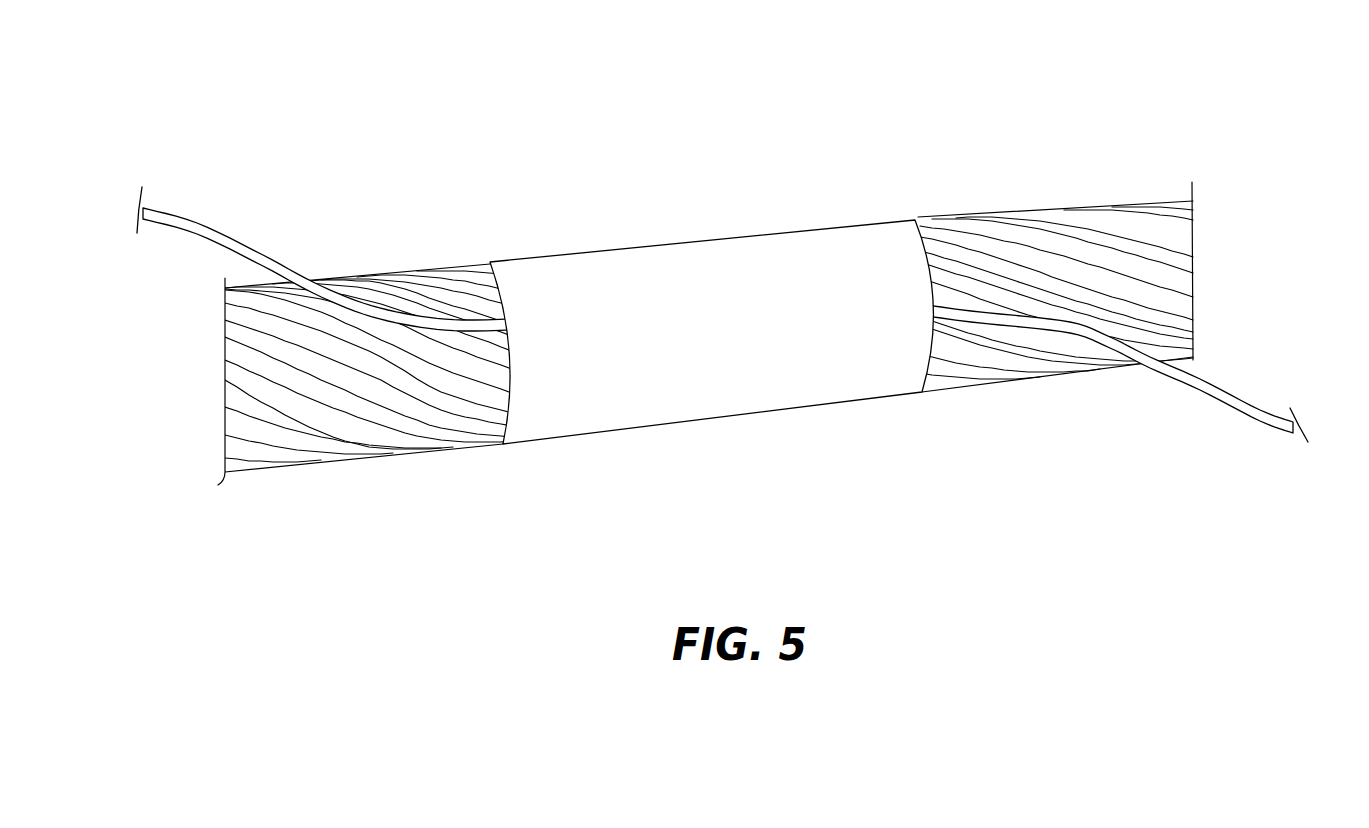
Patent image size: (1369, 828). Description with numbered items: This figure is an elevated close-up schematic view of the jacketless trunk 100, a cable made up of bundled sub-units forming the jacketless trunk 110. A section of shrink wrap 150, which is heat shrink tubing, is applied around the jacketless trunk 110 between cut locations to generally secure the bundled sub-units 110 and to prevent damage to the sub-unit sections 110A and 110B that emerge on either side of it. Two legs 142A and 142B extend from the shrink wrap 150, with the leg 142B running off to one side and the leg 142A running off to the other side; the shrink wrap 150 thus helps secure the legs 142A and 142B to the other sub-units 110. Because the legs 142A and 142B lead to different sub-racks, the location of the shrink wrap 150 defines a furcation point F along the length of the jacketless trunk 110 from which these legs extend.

The jacketless trunk 100 is at (702, 304).
The jacketless trunk / sub-units 110 is at (1118, 296).
The sub-unit section 110A is at (1085, 332).
The sub-unit section 110B is at (313, 282).
The leg 142A is at (1126, 401).
The leg 142B is at (302, 259).
The shrink wrap 150 is at (648, 252).
The furcation point F is at (702, 438).